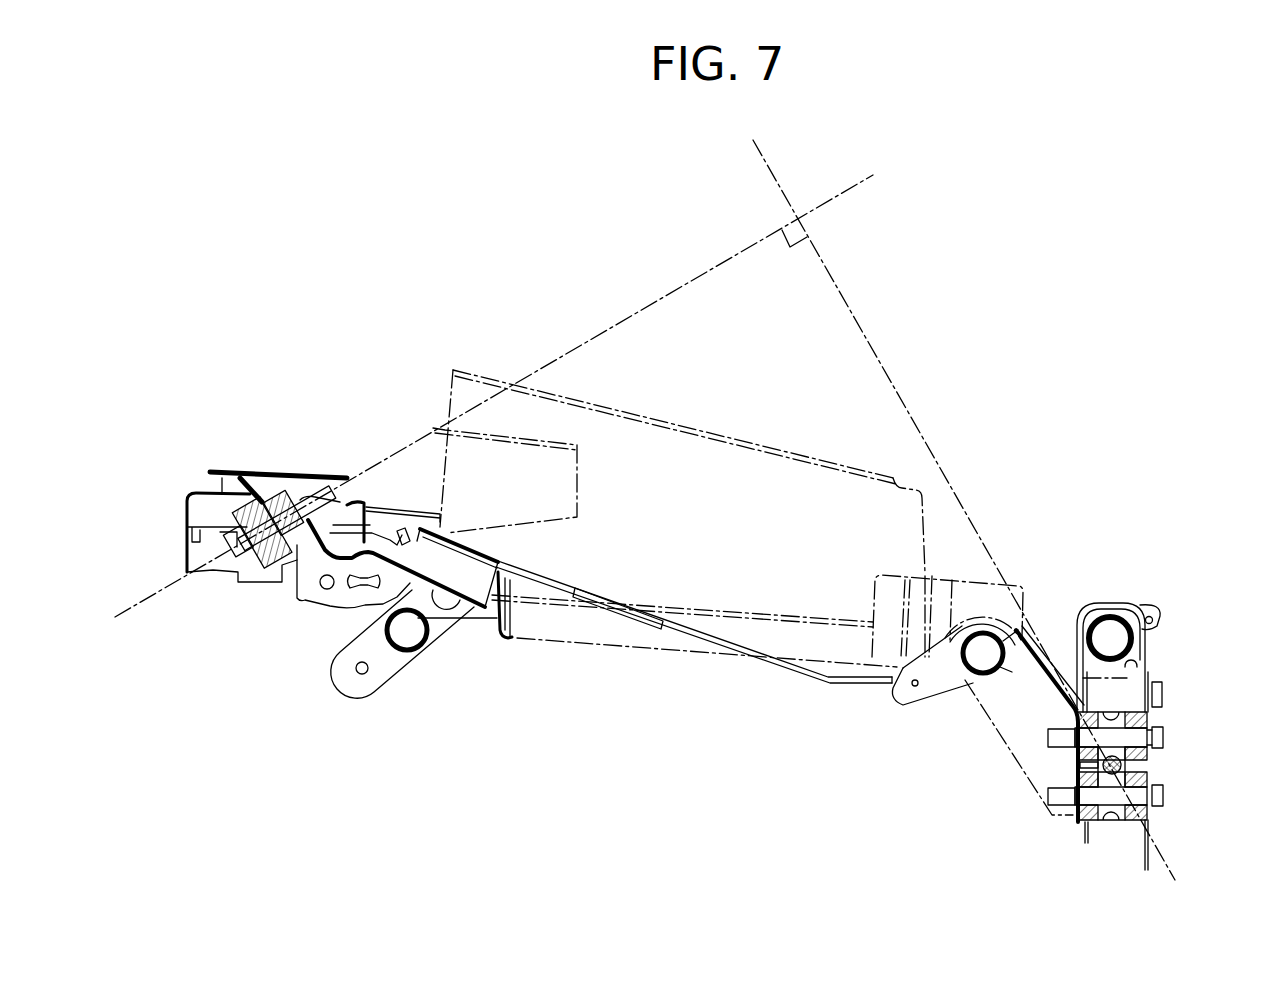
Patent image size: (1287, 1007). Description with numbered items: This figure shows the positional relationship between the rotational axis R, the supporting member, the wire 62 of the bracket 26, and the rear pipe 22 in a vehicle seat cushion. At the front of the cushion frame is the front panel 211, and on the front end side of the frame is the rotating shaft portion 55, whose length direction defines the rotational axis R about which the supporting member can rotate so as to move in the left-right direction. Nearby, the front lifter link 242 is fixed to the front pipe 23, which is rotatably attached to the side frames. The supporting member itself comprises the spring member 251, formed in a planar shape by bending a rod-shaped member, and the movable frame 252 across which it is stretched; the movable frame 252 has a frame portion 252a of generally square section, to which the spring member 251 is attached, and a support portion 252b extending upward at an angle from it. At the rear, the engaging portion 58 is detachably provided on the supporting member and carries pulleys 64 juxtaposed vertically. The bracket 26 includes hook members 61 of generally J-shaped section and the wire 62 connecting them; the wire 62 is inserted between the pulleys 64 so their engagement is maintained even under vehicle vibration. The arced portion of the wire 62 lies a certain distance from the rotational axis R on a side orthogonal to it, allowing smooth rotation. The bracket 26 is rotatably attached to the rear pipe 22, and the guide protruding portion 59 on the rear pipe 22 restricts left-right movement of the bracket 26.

The rotational axis R is at (645, 510).
The front panel 211 is at (187, 520).
The rotating shaft portion 55 is at (262, 538).
The front pipe 23 is at (423, 645).
The front lifter link 242 is at (358, 686).
The movable frame 252 is at (447, 362).
The frame portion 252a is at (609, 637).
The support portion 252b is at (807, 465).
The spring member 251 is at (800, 683).
The hook member 61 is at (1072, 655).
The rear pipe 22 is at (1107, 610).
The guide protruding portion 59 is at (1143, 612).
The bracket 26 is at (1150, 665).
The engaging portion 58 is at (1163, 758).
The wire 62 is at (1076, 766).
The pulley 64 is at (1147, 722).